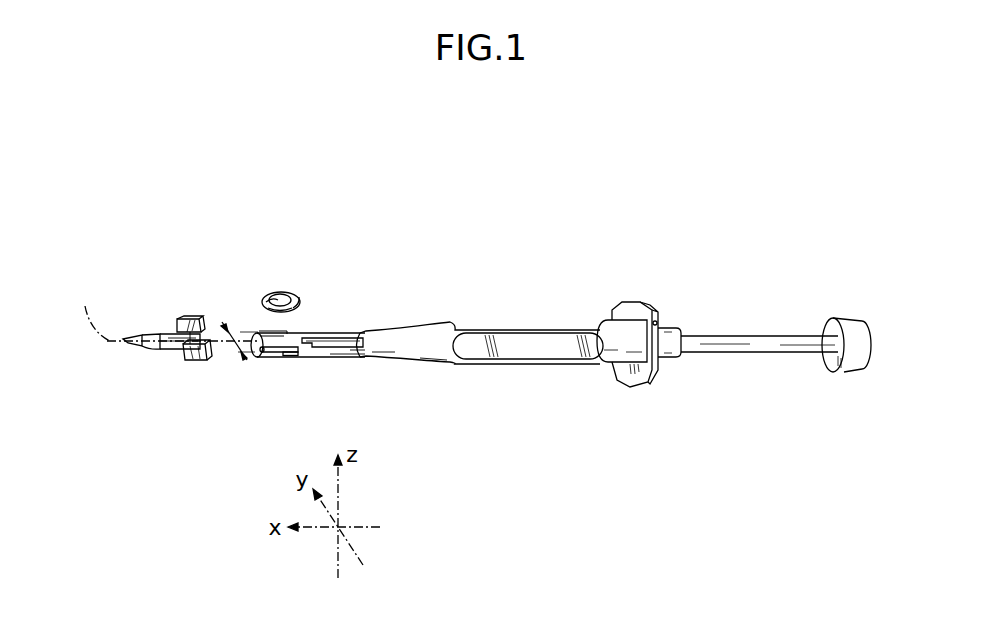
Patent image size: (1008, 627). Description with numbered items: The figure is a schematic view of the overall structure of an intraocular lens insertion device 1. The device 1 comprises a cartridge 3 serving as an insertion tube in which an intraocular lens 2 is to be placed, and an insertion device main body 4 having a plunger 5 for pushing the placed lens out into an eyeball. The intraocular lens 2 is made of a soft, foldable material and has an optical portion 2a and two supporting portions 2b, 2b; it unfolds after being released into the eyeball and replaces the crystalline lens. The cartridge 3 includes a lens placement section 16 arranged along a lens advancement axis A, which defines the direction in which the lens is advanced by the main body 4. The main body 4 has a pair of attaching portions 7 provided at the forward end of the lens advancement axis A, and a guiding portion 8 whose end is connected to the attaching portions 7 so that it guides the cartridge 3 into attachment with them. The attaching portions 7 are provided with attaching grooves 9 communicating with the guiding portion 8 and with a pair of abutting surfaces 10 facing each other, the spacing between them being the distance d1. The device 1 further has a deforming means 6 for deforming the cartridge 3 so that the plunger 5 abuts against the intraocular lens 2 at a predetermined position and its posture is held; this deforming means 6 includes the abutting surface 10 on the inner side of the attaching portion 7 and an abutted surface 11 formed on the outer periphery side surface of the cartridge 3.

The intraocular lens insertion device 1 is at (257, 131).
The intraocular lens 2 is at (284, 280).
The optical portion 2a is at (283, 307).
The supporting portions 2b is at (266, 302).
The cartridge 3 is at (163, 320).
The insertion device main body 4 is at (411, 303).
The plunger 5 is at (347, 346).
The deforming means 6 is at (188, 293).
The attaching portion 7 is at (275, 353).
The guiding portion 8 is at (337, 335).
The attaching grooves 9 is at (288, 358).
The abutting surfaces 10 is at (253, 341).
The abutted surface 11 is at (198, 322).
The lens placement section 16 is at (187, 362).
The distance between abutting surfaces d1 is at (227, 356).
The lens advancement axis A is at (93, 309).